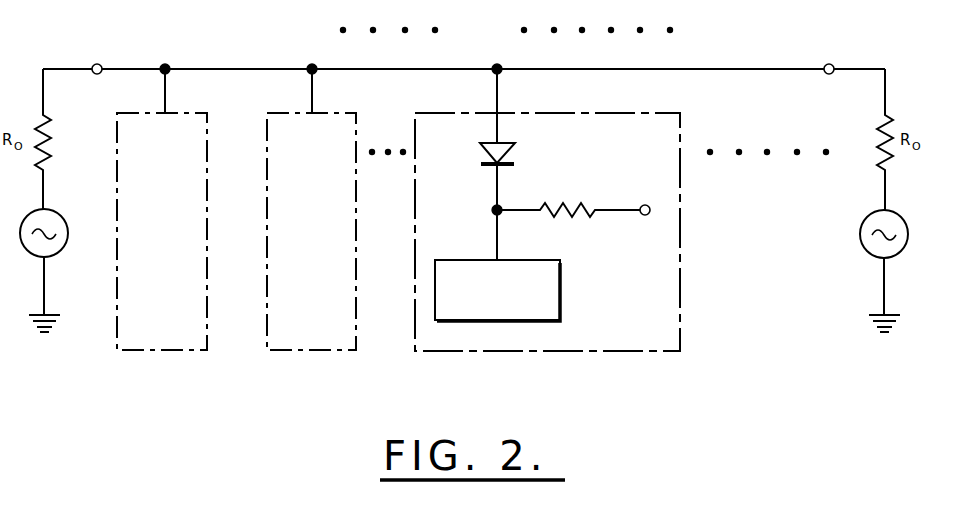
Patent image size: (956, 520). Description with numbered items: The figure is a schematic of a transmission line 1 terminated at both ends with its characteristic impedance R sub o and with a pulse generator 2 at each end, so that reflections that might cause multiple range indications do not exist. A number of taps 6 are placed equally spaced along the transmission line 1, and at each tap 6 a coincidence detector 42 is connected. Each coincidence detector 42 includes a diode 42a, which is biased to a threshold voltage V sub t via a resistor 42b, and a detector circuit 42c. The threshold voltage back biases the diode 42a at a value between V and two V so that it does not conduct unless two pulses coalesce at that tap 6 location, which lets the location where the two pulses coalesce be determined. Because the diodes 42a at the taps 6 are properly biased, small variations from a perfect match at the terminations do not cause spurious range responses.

The transmission line 1 is at (748, 66).
The pulse generator 2 is at (63, 212).
The tap 6 is at (165, 65).
The coincidence detector 42 is at (130, 352).
The diode 42a is at (517, 166).
The resistor 42b is at (572, 200).
The detector circuit 42c is at (563, 283).